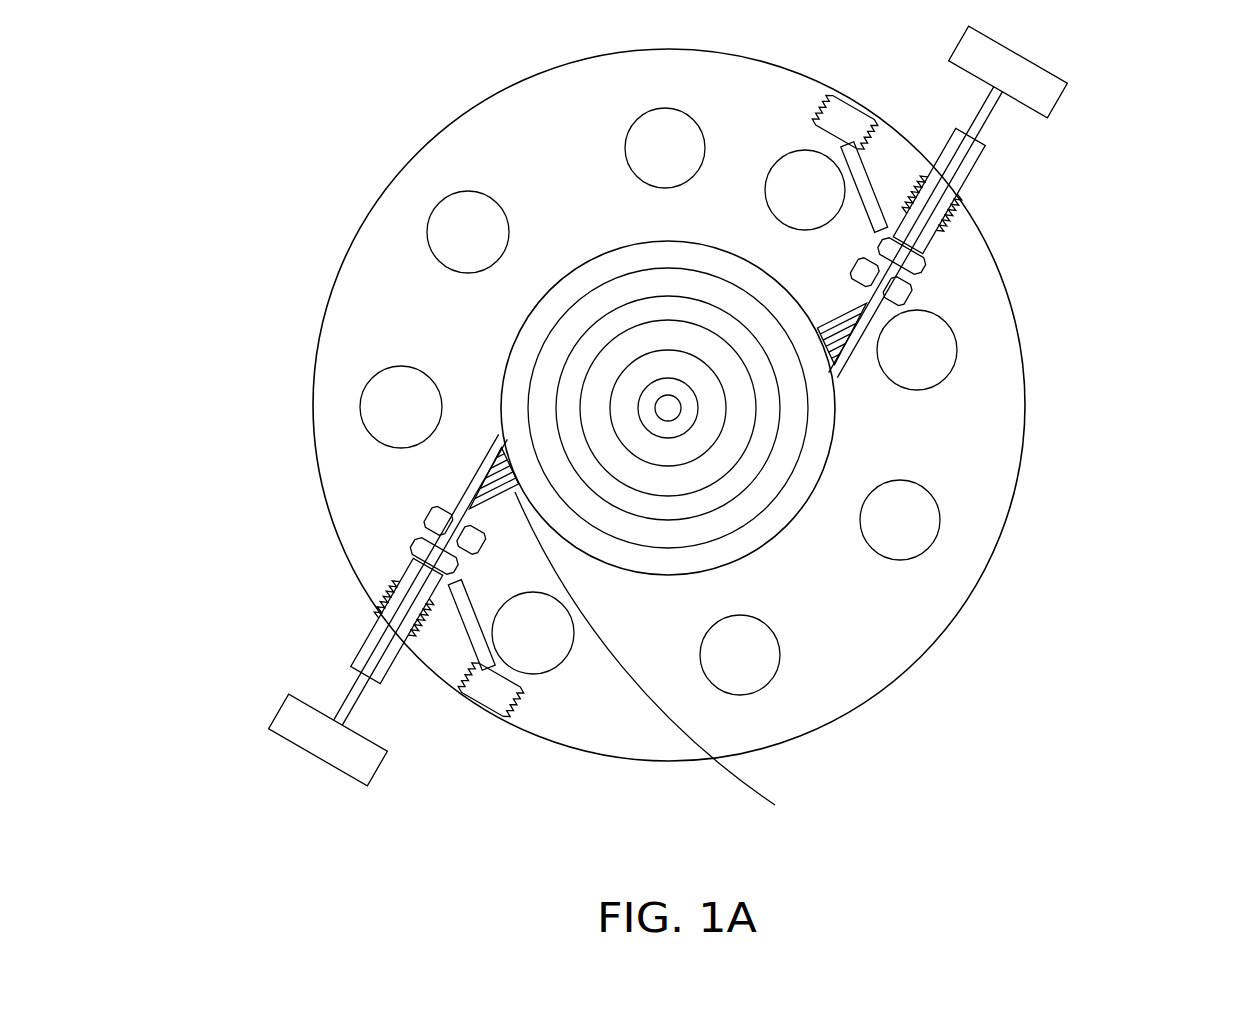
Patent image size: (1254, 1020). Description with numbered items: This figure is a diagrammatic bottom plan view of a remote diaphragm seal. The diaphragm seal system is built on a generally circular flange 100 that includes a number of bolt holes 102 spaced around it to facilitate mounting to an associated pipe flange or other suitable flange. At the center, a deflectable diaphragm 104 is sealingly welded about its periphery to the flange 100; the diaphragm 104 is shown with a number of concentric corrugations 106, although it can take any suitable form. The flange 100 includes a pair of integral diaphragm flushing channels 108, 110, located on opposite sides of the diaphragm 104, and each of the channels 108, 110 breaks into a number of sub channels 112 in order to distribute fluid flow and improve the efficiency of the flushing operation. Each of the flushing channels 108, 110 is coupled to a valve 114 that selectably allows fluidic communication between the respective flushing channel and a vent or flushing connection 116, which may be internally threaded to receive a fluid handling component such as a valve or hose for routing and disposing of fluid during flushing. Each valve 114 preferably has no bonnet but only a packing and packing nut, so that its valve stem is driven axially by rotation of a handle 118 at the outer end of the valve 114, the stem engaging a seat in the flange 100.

The diaphragm seal system flange 100 is at (965, 608).
The bolt holes 102 is at (938, 520).
The deflectable diaphragm 104 is at (603, 388).
The corrugations 106 is at (652, 316).
The diaphragm flushing channel 108 is at (472, 480).
The diaphragm flushing channel 110 is at (838, 358).
The sub channels 112 is at (667, 667).
The valve 114 is at (1017, 52).
The vent or flushing connection 116 is at (862, 110).
The handle 118 is at (1067, 110).